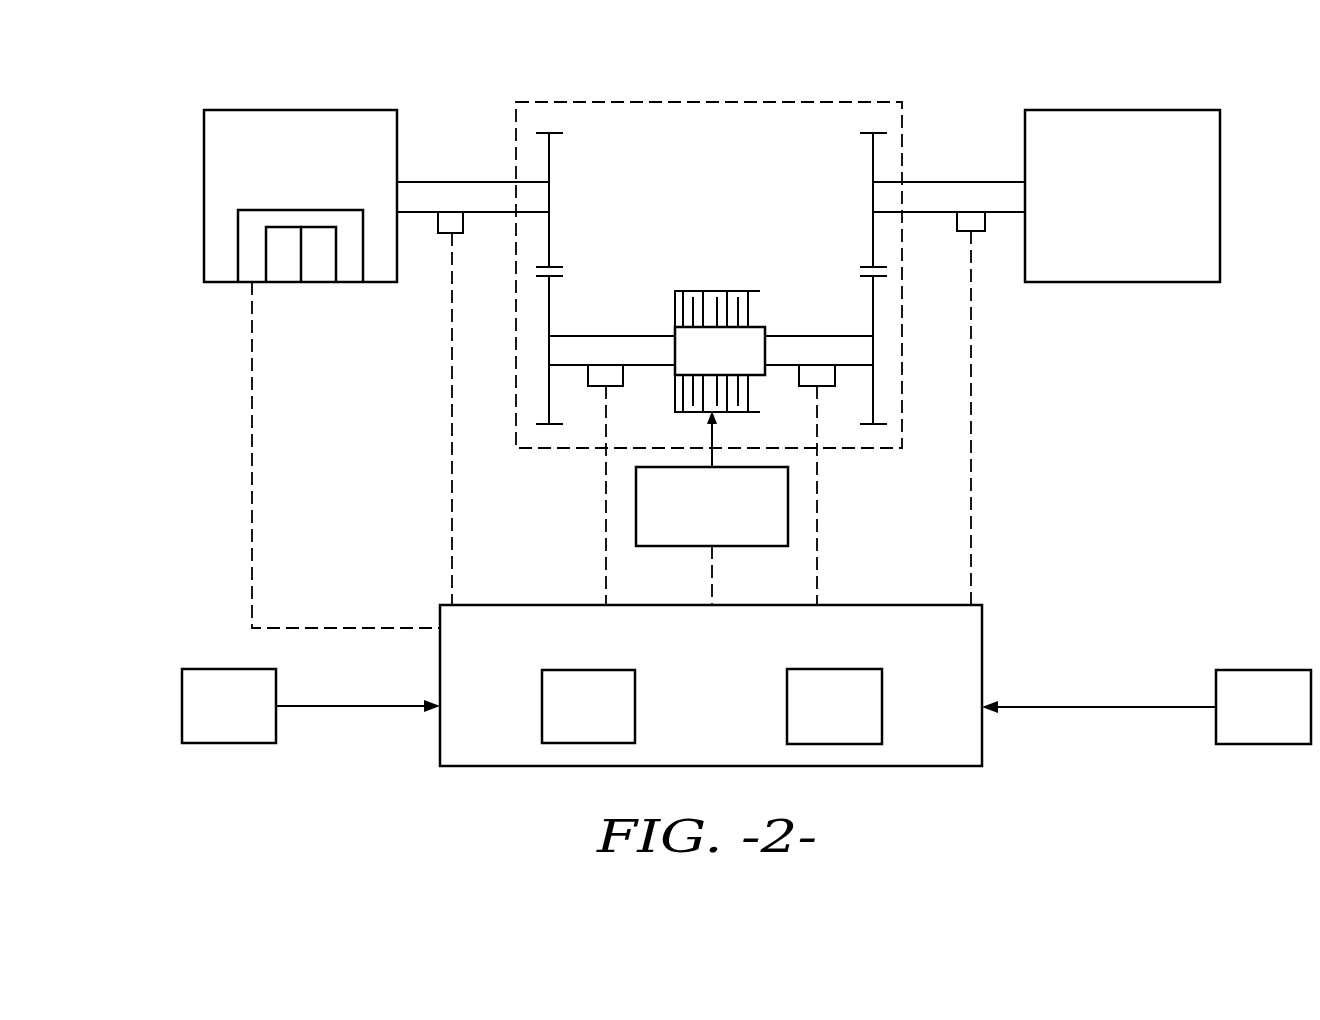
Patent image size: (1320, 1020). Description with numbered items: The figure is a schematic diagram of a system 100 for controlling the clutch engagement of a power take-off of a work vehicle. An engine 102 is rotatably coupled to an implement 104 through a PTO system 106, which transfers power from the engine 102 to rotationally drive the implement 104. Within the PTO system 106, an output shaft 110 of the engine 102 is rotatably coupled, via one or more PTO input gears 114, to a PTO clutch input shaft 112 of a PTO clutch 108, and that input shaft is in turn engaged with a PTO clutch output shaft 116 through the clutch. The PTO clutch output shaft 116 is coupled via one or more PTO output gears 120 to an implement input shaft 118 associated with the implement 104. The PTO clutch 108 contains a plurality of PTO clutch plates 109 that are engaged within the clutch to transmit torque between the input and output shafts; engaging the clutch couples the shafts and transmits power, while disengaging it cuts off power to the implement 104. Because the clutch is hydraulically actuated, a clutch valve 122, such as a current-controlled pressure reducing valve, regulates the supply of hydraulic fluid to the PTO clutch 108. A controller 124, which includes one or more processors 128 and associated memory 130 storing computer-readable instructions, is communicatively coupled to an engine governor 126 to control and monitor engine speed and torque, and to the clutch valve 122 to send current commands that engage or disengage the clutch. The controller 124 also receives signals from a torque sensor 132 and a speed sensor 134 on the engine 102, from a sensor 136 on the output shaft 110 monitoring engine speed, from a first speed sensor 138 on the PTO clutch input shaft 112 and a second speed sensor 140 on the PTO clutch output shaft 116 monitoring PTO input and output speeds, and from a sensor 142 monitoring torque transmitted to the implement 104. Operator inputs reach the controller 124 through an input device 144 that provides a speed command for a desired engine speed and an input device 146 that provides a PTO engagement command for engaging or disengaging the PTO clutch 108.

The system 100 is at (177, 150).
The engine 102 is at (319, 193).
The implement 104 is at (1137, 223).
The power take-off (PTO) system 106 is at (829, 102).
The PTO clutch 108 is at (739, 319).
The PTO clutch plates 109 is at (708, 294).
The output shaft 110 is at (507, 180).
The PTO clutch input shaft 112 is at (645, 333).
The PTO input gears 114 is at (549, 312).
The PTO clutch output shaft 116 is at (778, 333).
The implement input shaft 118 is at (918, 180).
The PTO output gears 120 is at (873, 312).
The clutch valve 122 is at (695, 548).
The controller 124 is at (849, 605).
The engine governor 126 is at (363, 257).
The processor 128 is at (607, 717).
The memory 130 is at (853, 717).
The torque sensor 132 is at (282, 272).
The speed sensor 134 is at (320, 272).
The sensor 136 is at (465, 222).
The first speed sensor 138 is at (626, 378).
The second speed sensor 140 is at (797, 378).
The sensor 142 is at (952, 220).
The input device 144 is at (248, 718).
The input device 146 is at (1281, 718).